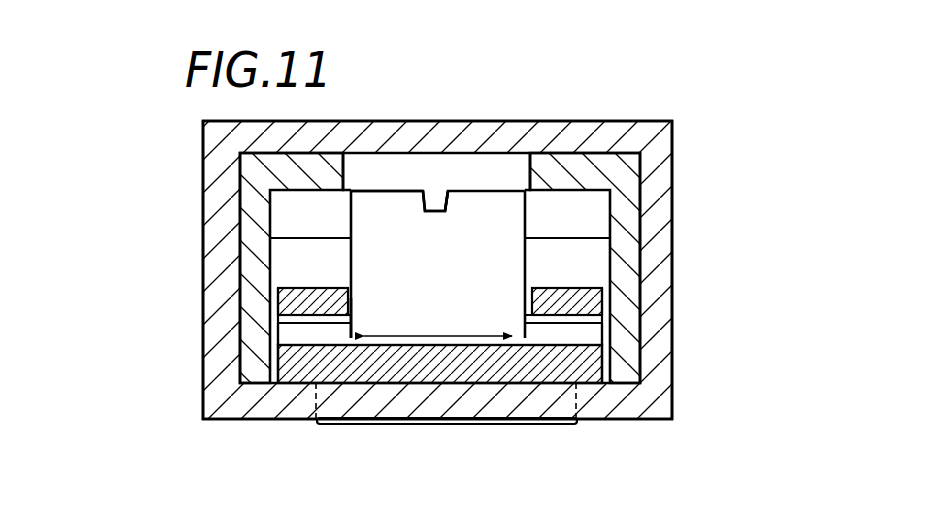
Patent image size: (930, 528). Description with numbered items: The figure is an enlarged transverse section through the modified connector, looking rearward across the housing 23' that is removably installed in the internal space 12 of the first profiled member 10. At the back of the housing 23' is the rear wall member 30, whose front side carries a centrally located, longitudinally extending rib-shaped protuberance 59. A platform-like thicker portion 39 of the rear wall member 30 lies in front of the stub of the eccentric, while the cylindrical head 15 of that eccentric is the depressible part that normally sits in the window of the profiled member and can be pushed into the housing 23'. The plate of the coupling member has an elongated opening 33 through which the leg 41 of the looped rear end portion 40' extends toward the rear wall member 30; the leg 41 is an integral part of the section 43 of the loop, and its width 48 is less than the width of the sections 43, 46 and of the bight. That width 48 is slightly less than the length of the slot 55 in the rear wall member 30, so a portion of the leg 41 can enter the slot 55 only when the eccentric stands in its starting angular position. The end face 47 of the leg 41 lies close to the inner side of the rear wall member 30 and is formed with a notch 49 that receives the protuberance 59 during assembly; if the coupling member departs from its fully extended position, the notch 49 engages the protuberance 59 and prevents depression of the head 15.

The first profiled member 10 is at (684, 107).
The internal space 12 is at (646, 244).
The head 15 is at (382, 425).
The housing 23' is at (228, 268).
The rear wall member 30 is at (558, 168).
The opening 33 is at (352, 298).
The thicker portion 39 is at (568, 216).
The looped rear end portion 40' is at (545, 330).
The leg 41 is at (484, 210).
The section 43 is at (590, 363).
The section 46 is at (605, 293).
The end face 47 is at (387, 183).
The width 48 is at (455, 338).
The notch 49 is at (456, 202).
The slot 55 is at (512, 170).
The protuberance 59 is at (437, 196).